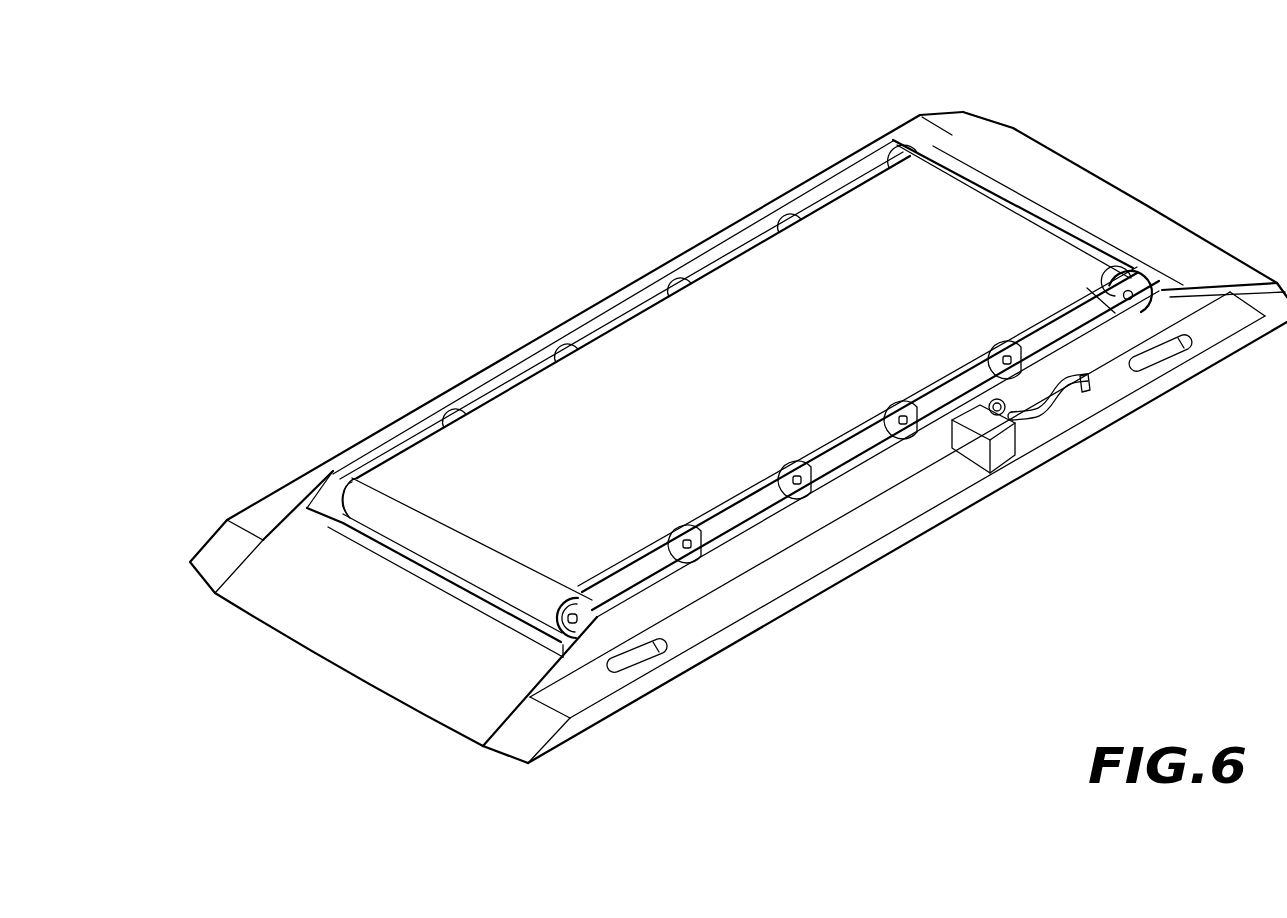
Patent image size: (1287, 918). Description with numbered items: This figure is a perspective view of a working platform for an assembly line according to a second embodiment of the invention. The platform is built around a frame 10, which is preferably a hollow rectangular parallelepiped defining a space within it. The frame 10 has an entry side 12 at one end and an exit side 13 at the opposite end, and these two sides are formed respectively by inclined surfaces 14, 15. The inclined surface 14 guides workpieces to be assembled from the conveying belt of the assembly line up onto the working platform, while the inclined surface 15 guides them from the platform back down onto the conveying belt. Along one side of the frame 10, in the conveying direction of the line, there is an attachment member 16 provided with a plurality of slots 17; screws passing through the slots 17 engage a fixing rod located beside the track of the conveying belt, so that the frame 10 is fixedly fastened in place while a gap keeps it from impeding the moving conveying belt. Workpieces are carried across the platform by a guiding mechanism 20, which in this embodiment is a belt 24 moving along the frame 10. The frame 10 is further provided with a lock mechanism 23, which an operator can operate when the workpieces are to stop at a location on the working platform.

The frame 10 is at (650, 288).
The entry side 12 is at (332, 664).
The exit side 13 is at (1150, 203).
The inclined surface 14 is at (277, 573).
The inclined surface 15 is at (1082, 190).
The attachment member 16 is at (823, 584).
The slots 17 is at (630, 658).
The guiding mechanism 20 is at (624, 318).
The lock mechanism 23 is at (1058, 410).
The belt 24 is at (748, 294).